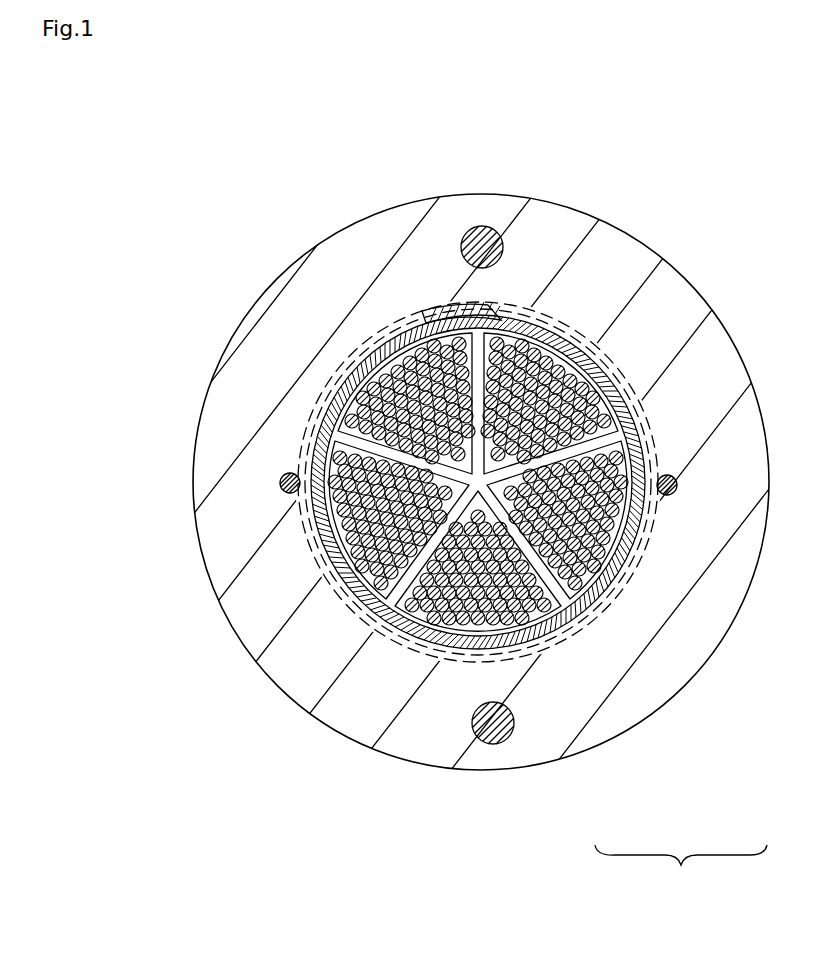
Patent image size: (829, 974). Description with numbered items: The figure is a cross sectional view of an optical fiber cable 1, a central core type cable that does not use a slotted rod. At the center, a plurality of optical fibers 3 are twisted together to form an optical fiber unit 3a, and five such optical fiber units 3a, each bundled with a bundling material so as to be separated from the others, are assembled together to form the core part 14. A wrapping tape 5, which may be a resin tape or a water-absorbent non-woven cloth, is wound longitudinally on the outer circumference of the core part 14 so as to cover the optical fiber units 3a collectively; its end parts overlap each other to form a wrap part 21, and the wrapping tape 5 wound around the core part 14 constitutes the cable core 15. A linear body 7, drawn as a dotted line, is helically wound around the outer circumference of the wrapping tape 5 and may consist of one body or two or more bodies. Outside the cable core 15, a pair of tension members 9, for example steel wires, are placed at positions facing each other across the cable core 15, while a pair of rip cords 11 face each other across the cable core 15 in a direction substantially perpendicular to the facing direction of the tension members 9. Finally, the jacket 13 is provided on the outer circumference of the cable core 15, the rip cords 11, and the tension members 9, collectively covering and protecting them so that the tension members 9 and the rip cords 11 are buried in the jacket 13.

The optical fiber cable 1 is at (618, 213).
The optical fiber 3 is at (625, 392).
The optical fiber unit 3a is at (597, 345).
The wrapping tape 5 is at (538, 647).
The linear body 7 is at (617, 597).
The tension member 9 is at (492, 745).
The rip cord 11 is at (290, 473).
The jacket 13 is at (345, 710).
The core part 14 is at (567, 633).
The cable core 15 is at (681, 862).
The wrap part 21 is at (450, 300).